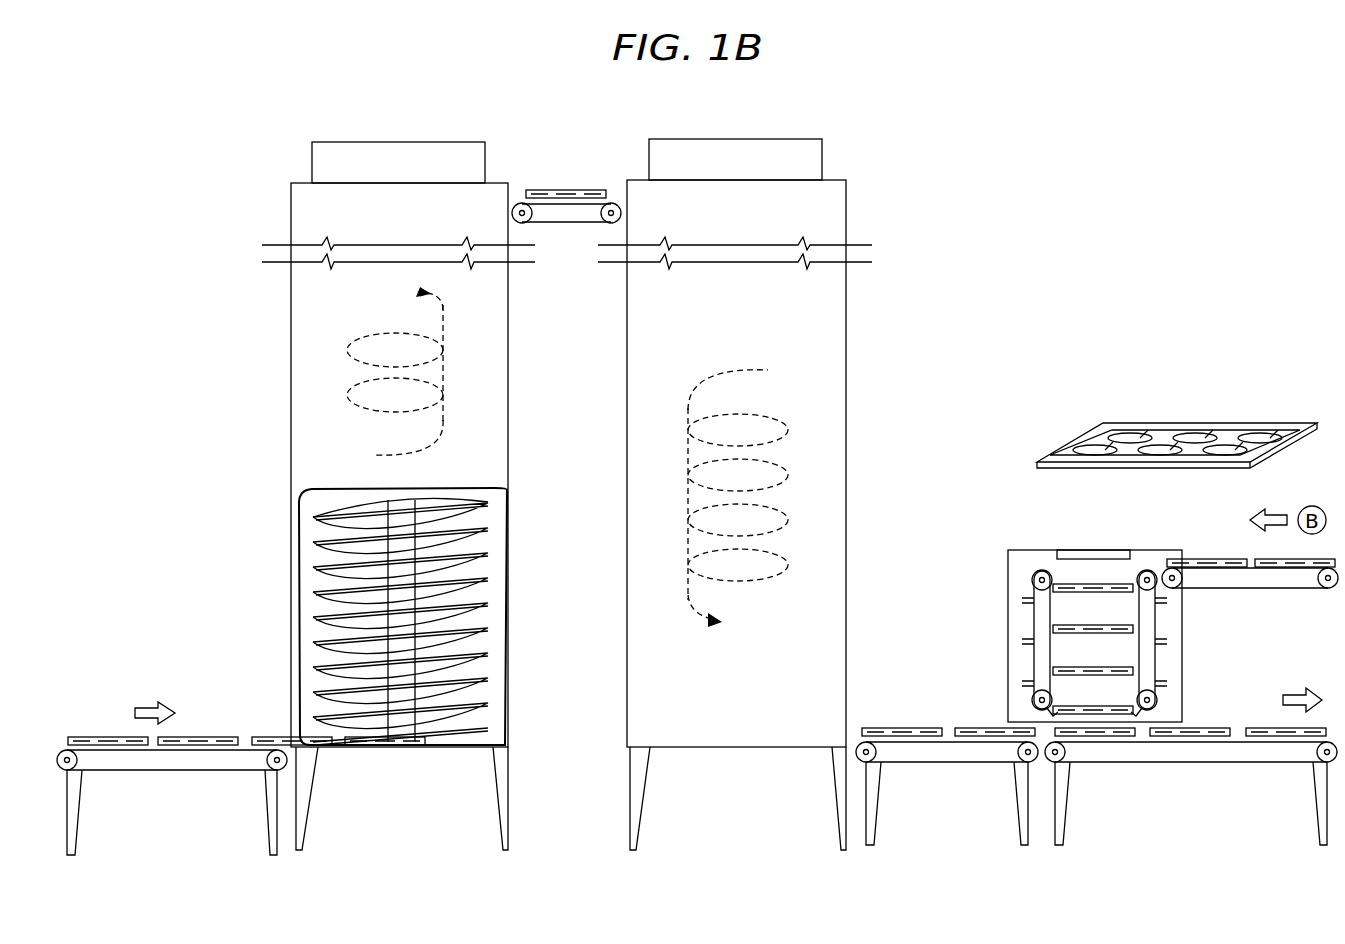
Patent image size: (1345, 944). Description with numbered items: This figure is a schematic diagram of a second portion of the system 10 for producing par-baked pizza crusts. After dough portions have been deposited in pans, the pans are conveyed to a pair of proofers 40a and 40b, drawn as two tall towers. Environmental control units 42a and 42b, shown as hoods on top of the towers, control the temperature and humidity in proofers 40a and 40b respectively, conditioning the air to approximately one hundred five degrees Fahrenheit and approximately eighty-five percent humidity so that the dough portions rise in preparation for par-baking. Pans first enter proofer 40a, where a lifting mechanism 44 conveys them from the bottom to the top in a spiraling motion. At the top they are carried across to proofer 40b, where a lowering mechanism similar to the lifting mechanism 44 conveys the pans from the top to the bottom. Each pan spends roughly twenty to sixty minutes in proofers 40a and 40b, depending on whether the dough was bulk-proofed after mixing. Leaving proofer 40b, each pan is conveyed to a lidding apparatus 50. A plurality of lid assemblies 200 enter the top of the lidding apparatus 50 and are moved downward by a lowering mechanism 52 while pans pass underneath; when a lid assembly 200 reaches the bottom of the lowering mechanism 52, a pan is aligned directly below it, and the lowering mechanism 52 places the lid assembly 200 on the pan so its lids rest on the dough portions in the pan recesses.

The system 10 is at (590, 124).
The proofer 40a is at (290, 422).
The proofer 40b is at (848, 511).
The environmental control unit 42a is at (425, 142).
The environmental control unit 42b is at (716, 139).
The lifting mechanism 44 is at (488, 565).
The lidding apparatus 50 is at (1008, 632).
The lowering mechanism 52 is at (1160, 654).
The lid assembly 200 is at (1189, 425).